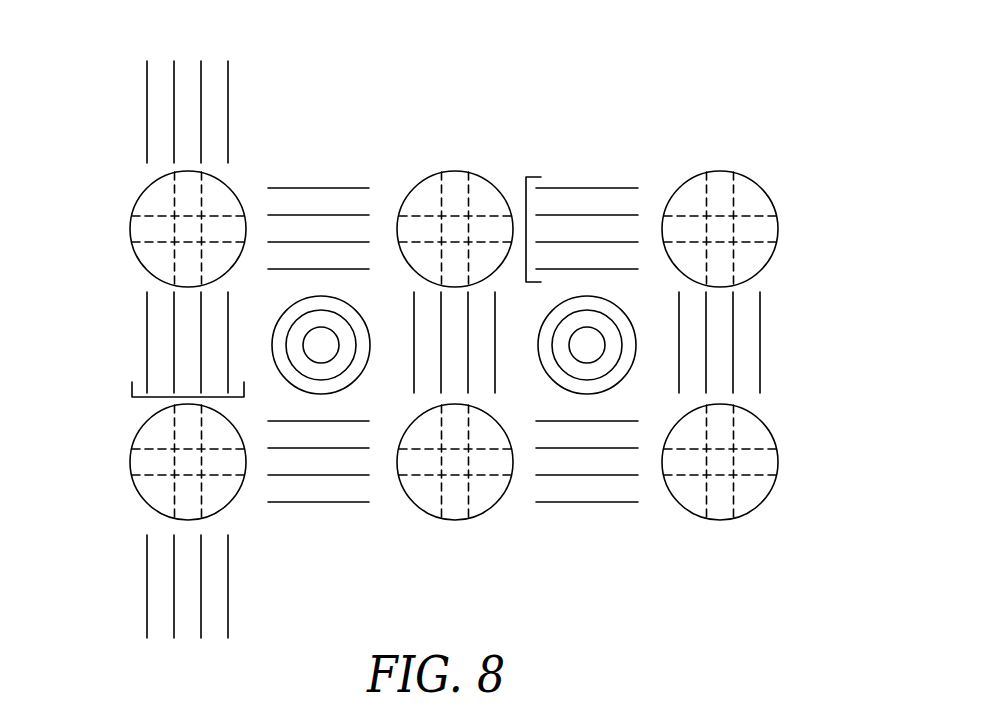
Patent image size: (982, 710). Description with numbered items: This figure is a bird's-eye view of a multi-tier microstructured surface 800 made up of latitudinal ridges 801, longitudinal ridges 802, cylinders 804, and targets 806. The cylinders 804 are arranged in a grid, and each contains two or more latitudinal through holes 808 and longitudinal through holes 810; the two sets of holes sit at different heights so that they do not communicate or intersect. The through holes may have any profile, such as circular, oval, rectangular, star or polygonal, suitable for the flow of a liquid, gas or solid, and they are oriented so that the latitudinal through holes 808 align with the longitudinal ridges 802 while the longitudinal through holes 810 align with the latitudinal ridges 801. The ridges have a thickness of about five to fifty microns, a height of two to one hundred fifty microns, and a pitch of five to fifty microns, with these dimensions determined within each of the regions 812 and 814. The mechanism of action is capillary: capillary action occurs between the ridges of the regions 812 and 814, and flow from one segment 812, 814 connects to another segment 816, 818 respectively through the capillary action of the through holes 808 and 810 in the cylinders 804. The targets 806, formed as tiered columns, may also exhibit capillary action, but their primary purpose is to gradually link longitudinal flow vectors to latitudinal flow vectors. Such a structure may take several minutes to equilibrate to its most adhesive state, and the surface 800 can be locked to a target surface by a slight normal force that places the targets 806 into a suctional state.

The multi-tier microstructured surface 800 is at (791, 72).
The latitudinal ridges 801 is at (588, 188).
The longitudinal ridges 802 is at (761, 340).
The cylinders 804 is at (763, 188).
The targets 806 is at (623, 377).
The latitudinal through holes 808 is at (720, 170).
The longitudinal through holes 810 is at (778, 228).
The region 812 is at (535, 176).
The region 814 is at (132, 398).
The segment 816 is at (310, 176).
The segment 818 is at (130, 570).